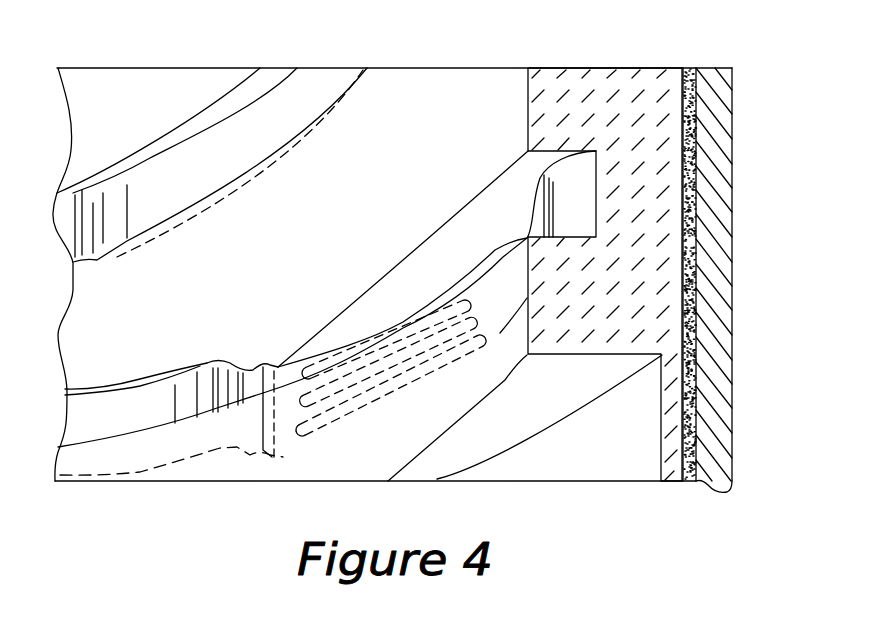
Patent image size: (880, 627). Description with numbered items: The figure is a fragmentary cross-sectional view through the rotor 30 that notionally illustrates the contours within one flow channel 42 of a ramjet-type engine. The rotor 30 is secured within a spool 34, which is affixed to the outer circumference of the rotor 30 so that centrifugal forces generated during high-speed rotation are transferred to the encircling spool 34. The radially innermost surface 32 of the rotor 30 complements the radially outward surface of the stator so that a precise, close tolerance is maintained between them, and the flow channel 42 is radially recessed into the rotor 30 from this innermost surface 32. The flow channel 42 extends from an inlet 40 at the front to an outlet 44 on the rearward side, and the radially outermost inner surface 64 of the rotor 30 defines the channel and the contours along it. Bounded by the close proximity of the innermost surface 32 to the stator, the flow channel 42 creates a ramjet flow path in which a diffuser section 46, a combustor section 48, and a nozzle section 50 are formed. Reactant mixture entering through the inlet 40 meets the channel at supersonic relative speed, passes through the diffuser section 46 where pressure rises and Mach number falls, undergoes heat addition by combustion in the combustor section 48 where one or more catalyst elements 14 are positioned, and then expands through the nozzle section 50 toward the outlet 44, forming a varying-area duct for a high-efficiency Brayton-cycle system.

The catalyst elements 14 is at (315, 373).
The rotor 30 is at (596, 75).
The radially innermost surface 32 is at (405, 80).
The spool 34 is at (732, 135).
The inlet 40 is at (403, 483).
The flow channel 42 is at (195, 110).
The outlet 44 is at (282, 67).
The diffuser section 46 is at (95, 405).
The combustor section 48 is at (278, 372).
The nozzle section 50 is at (163, 186).
The radially outermost inner surface 64 is at (240, 157).